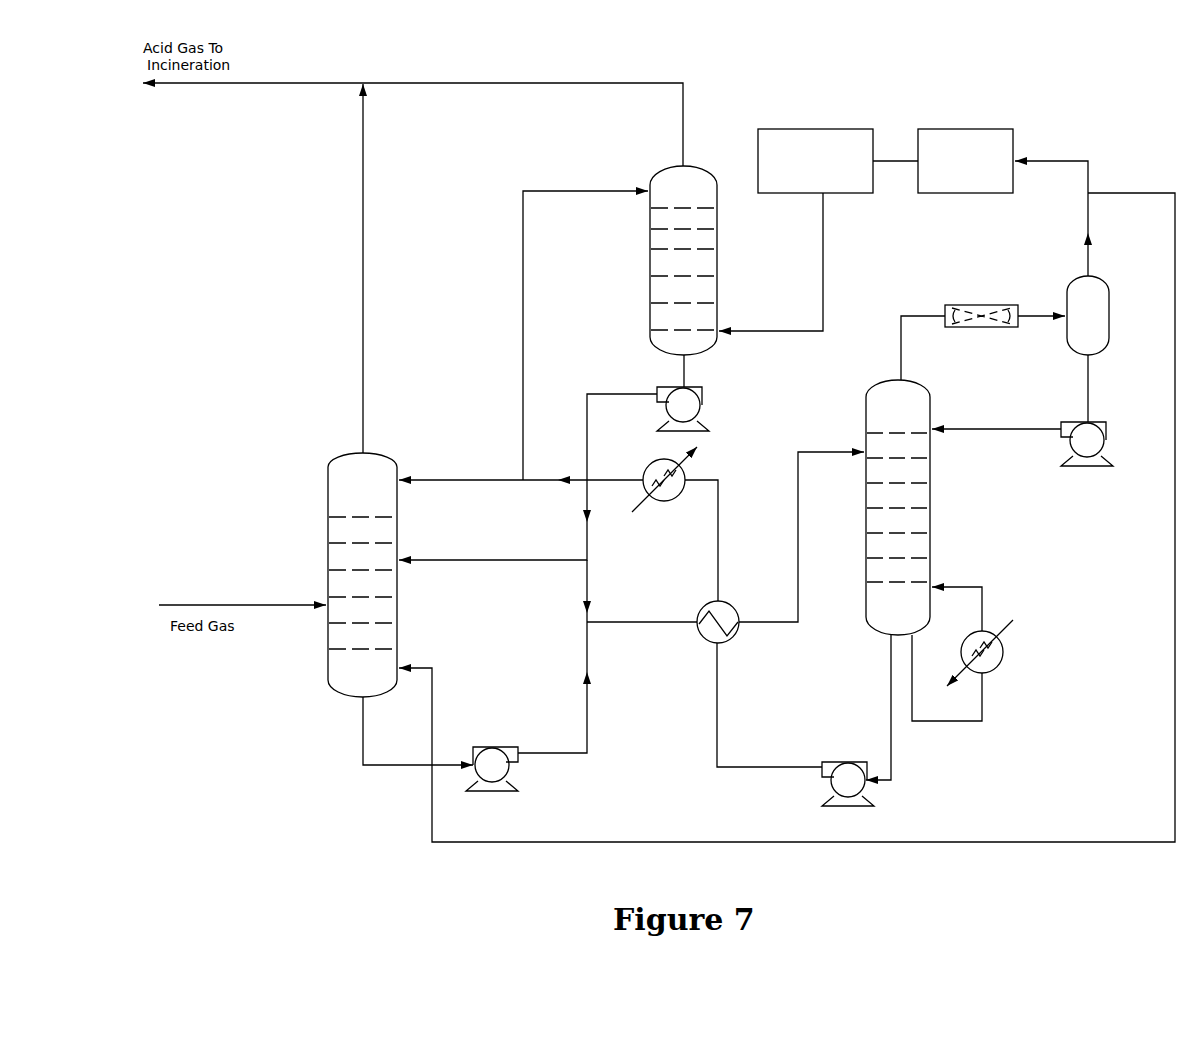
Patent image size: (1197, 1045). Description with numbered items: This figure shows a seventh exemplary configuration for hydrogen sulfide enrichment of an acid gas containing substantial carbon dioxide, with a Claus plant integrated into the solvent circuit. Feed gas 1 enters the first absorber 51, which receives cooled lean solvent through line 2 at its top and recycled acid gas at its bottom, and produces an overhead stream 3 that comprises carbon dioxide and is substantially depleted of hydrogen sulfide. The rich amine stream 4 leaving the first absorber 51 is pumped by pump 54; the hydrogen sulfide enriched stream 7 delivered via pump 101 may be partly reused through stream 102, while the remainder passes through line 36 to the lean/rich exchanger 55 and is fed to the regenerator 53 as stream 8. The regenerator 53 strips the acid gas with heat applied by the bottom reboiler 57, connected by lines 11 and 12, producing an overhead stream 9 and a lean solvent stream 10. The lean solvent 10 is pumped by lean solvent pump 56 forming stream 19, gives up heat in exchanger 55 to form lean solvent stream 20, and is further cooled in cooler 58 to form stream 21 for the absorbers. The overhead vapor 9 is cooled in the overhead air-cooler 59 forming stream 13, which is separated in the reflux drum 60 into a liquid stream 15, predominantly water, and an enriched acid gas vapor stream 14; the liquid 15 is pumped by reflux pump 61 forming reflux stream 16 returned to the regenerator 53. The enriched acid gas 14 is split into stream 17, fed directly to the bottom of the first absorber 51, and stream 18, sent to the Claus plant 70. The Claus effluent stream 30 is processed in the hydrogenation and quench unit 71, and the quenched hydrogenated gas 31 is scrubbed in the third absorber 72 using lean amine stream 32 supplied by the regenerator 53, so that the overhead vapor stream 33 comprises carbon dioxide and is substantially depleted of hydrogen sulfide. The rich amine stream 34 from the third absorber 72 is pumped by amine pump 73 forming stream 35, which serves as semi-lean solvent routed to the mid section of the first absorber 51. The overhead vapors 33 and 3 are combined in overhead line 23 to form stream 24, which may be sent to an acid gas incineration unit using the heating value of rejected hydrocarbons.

The feed gas 1 is at (240, 605).
The lean solvent stream to absorber 2 is at (458, 480).
The overhead stream 3 is at (362, 360).
The rich amine stream 4 is at (405, 765).
The hydrogen sulfide enriched stream 7 is at (587, 718).
The regenerator feed stream 8 is at (777, 622).
The overhead stream 9 is at (901, 316).
The lean solvent stream 10 is at (891, 706).
The reboiler return stream 11 is at (942, 721).
The reboiled vapor stream 12 is at (964, 587).
The cooled overhead stream 13 is at (1047, 316).
The enriched acid gas stream 14 is at (1088, 232).
The liquid stream 15 is at (1088, 395).
The reflux stream 16 is at (1003, 429).
The recycling stream 17 is at (1175, 305).
The Claus plant feed stream 18 is at (1052, 161).
The pumped lean solvent stream 19 is at (775, 767).
The lean solvent stream 20 is at (718, 525).
The cooled lean solvent stream 21 is at (603, 480).
The overhead stream 23 is at (322, 83).
The combined overhead stream 24 is at (183, 83).
The Claus unit effluent stream 30 is at (903, 160).
The quenched hydrogenated gas 31 is at (823, 268).
The lean amine stream 32 is at (523, 290).
The overhead vapor stream 33 is at (622, 83).
The rich amine stream 34 is at (686, 362).
The semi-lean solvent stream 35 is at (590, 440).
The solvent stream to exchanger 36 is at (661, 622).
The first absorber 51 is at (329, 543).
The regenerator 53 is at (866, 522).
The pump 54 is at (503, 792).
The lean/rich exchanger 55 is at (734, 640).
The lean solvent pump 56 is at (848, 805).
The bottom reboiler 57 is at (1000, 672).
The cooler 58 is at (676, 498).
The overhead air-cooler 59 is at (980, 305).
The reflux drum 60 is at (1105, 345).
The reflux pump 61 is at (1098, 465).
The Claus plant 70 is at (970, 129).
The hydrogenation and quench unit 71 is at (828, 129).
The third absorber 72 is at (660, 172).
The amine pump 73 is at (700, 412).
The pump 101 is at (497, 560).
The reuse stream 102 is at (589, 590).